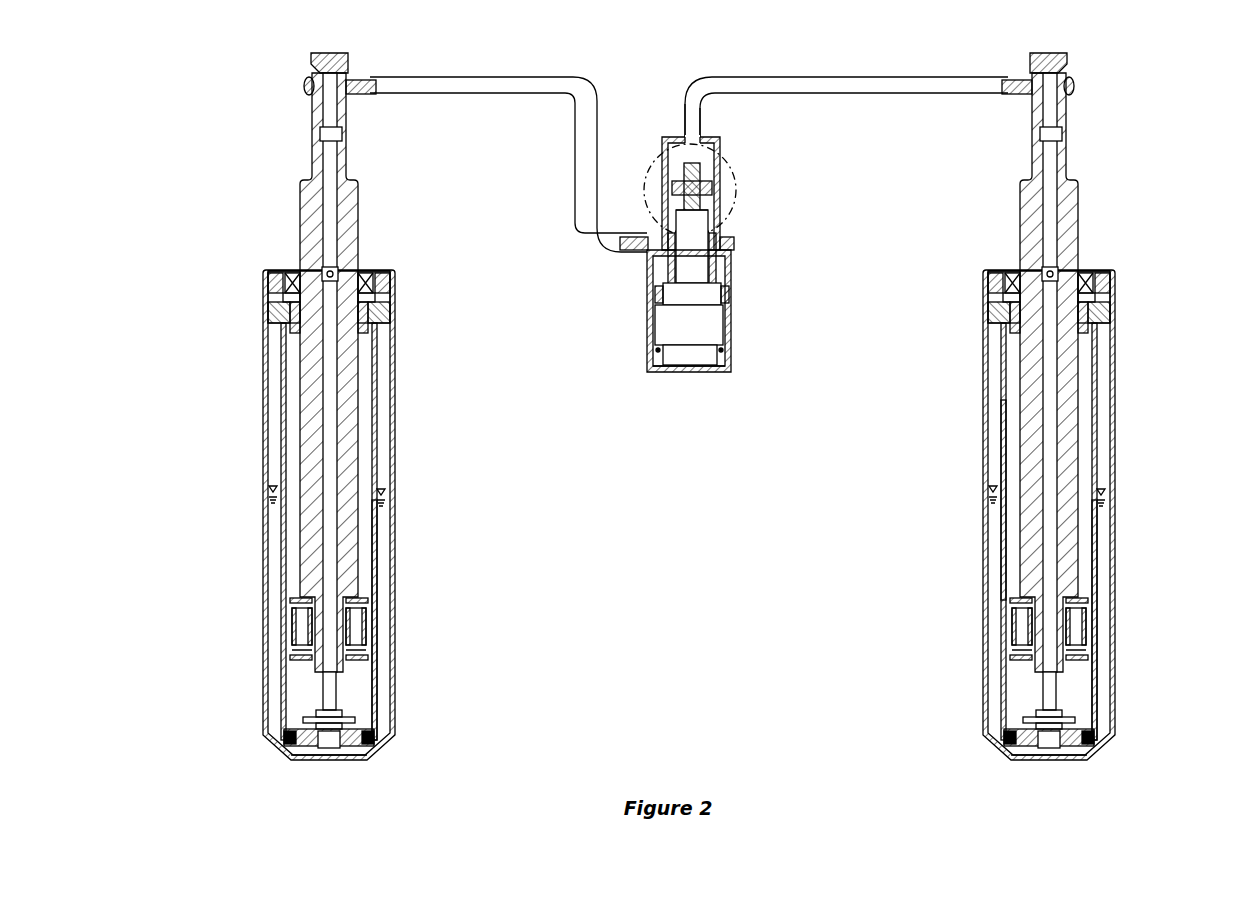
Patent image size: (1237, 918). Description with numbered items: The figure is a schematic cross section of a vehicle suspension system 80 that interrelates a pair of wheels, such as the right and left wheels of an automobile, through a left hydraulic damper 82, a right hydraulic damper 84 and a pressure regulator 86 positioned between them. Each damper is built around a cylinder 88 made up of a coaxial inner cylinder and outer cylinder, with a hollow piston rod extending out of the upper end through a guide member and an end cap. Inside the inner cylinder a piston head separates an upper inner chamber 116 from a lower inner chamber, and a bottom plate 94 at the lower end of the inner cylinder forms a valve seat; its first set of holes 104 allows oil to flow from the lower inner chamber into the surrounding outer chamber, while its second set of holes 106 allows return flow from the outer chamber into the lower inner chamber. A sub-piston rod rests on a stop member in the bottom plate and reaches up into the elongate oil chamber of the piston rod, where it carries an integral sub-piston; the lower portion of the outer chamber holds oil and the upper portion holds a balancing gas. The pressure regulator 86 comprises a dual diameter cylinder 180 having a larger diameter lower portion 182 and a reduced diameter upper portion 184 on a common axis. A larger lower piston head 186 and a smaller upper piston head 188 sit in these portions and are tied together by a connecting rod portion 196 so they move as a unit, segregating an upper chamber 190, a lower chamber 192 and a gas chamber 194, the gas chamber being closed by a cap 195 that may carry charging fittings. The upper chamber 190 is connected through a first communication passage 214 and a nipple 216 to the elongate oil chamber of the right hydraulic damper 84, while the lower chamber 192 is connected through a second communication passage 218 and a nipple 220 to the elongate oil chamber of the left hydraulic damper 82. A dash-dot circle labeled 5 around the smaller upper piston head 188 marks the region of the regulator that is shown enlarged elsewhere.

The vehicle suspension system 80 is at (567, 468).
The left hydraulic damper 82 is at (267, 252).
The right hydraulic damper 84 is at (1150, 245).
The pressure regulator 86 is at (750, 318).
The cylinder 88 is at (463, 488).
The bottom plate 94 is at (1084, 757).
The first set of holes 104 is at (345, 750).
The second set of holes 106 is at (290, 757).
The upper inner chamber 116 is at (959, 500).
The dual diameter cylinder 180 is at (712, 262).
The larger diameter lower portion 182 is at (657, 330).
The reduced diameter upper portion 184 is at (664, 142).
The larger lower piston head 186 is at (722, 294).
The smaller upper piston head 188 is at (672, 190).
The upper chamber 190 is at (705, 137).
The lower chamber 192 is at (714, 280).
The gas chamber 194 is at (718, 352).
The cap 195 is at (690, 372).
The connecting rod portion 196 is at (716, 240).
The first communication passage 214 is at (900, 95).
The nipple 216 is at (1073, 66).
The second communication passage 218 is at (497, 95).
The nipple 220 is at (308, 62).
The detail circle FIG. 5 is at (728, 172).